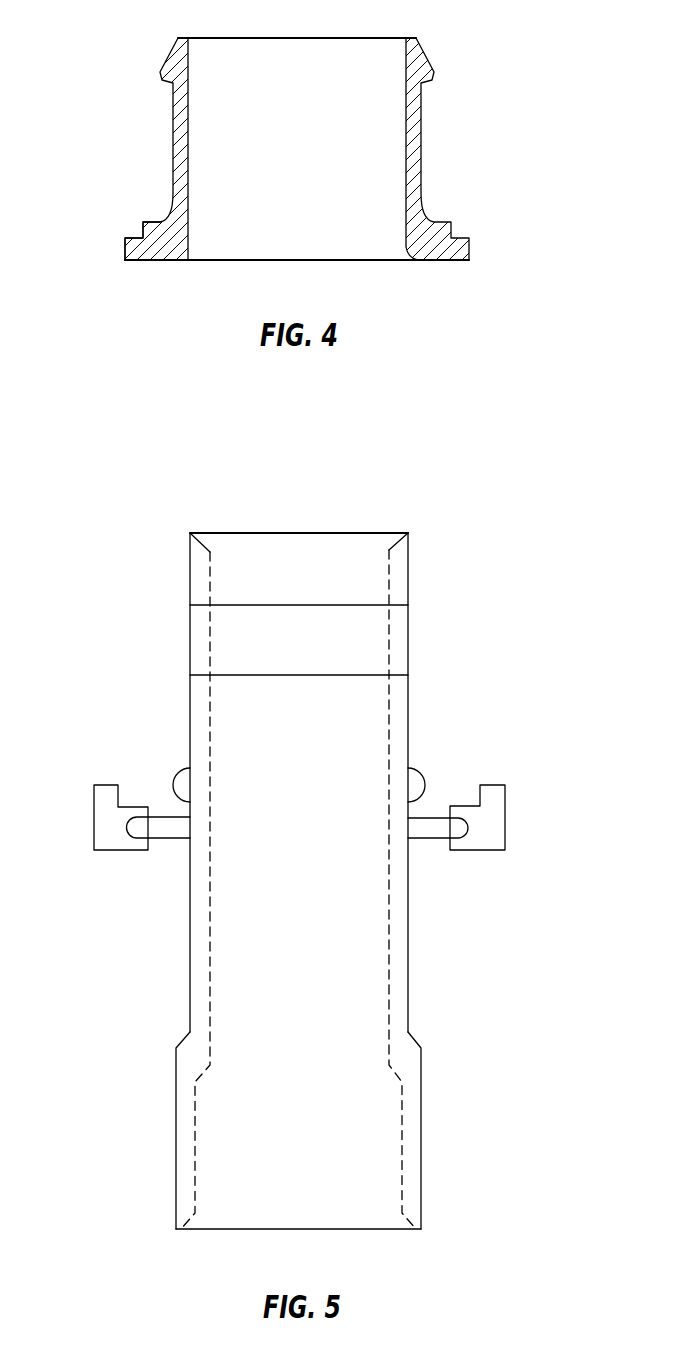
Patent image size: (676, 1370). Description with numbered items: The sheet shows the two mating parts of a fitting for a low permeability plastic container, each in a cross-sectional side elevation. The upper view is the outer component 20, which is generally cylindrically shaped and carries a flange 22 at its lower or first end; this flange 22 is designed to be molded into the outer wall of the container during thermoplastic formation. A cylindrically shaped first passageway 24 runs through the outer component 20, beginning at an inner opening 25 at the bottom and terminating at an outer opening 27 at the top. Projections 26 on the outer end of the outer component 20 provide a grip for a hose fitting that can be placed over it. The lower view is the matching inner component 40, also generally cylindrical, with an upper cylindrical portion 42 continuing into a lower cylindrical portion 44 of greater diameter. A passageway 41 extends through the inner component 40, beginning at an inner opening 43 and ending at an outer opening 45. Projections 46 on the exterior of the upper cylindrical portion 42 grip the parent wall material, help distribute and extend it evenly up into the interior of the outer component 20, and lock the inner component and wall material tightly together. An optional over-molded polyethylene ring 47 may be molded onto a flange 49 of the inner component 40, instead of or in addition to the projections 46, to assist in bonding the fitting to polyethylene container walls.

In FIG. 4, the outer component 20 is at (147, 155).
In FIG. 4, the flange 22 is at (128, 260).
In FIG. 4, the first passageway 24 is at (312, 53).
In FIG. 4, the inner opening 25 is at (300, 261).
In FIG. 4, the projections 26 is at (437, 72).
In FIG. 4, the outer opening 27 is at (247, 36).
In FIG. 5, the inner component 40 is at (428, 952).
In FIG. 5, the passageway 41 is at (292, 697).
In FIG. 5, the upper cylindrical portion 42 is at (410, 742).
In FIG. 5, the inner opening 43 is at (293, 1229).
In FIG. 5, the lower cylindrical portion 44 is at (422, 1180).
In FIG. 5, the outer opening 45 is at (302, 532).
In FIG. 5, the projections 46 is at (422, 782).
In FIG. 5, the over-molded polyethylene ring 47 is at (503, 785).
In FIG. 5, the flange 49 is at (422, 838).